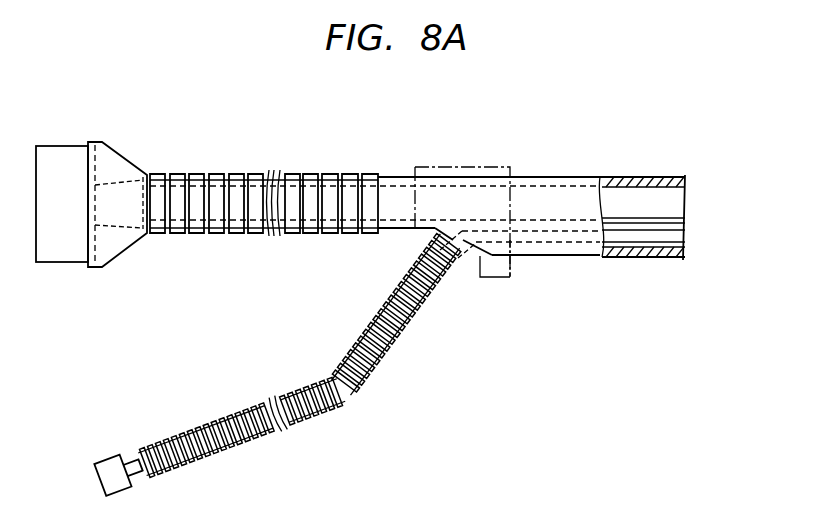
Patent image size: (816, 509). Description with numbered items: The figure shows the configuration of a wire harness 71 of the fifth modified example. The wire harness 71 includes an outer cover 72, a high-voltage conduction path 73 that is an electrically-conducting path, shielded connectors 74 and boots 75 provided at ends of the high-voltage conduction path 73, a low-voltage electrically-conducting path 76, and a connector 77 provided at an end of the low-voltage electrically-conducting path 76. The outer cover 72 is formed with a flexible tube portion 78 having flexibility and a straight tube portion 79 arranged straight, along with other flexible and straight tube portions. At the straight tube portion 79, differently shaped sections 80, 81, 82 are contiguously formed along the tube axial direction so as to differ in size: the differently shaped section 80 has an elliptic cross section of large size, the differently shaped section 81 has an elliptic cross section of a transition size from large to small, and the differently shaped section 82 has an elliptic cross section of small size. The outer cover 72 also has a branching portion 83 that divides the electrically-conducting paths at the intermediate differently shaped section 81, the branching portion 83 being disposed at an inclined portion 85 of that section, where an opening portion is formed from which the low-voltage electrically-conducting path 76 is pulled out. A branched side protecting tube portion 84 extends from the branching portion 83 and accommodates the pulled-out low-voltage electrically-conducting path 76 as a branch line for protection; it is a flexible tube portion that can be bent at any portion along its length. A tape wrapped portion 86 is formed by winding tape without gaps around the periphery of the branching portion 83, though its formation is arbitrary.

The wire harness 71 is at (567, 153).
The outer cover 72 is at (573, 258).
The high-voltage conduction path 73 is at (668, 202).
The shielded connector 74 is at (66, 252).
The boot 75 is at (123, 148).
The low-voltage electrically-conducting path 76 is at (680, 236).
The connector 77 is at (103, 458).
The flexible tube portion 78 is at (296, 172).
The straight tube portion 79 is at (625, 176).
The differently shaped section 80 is at (534, 176).
The differently shaped section 81 is at (471, 166).
The differently shaped section 82 is at (401, 176).
The branching portion 83 is at (437, 228).
The branched side protecting tube portion 84 is at (230, 410).
The inclined portion 85 is at (480, 262).
The tape wrapped portion 86 is at (503, 283).